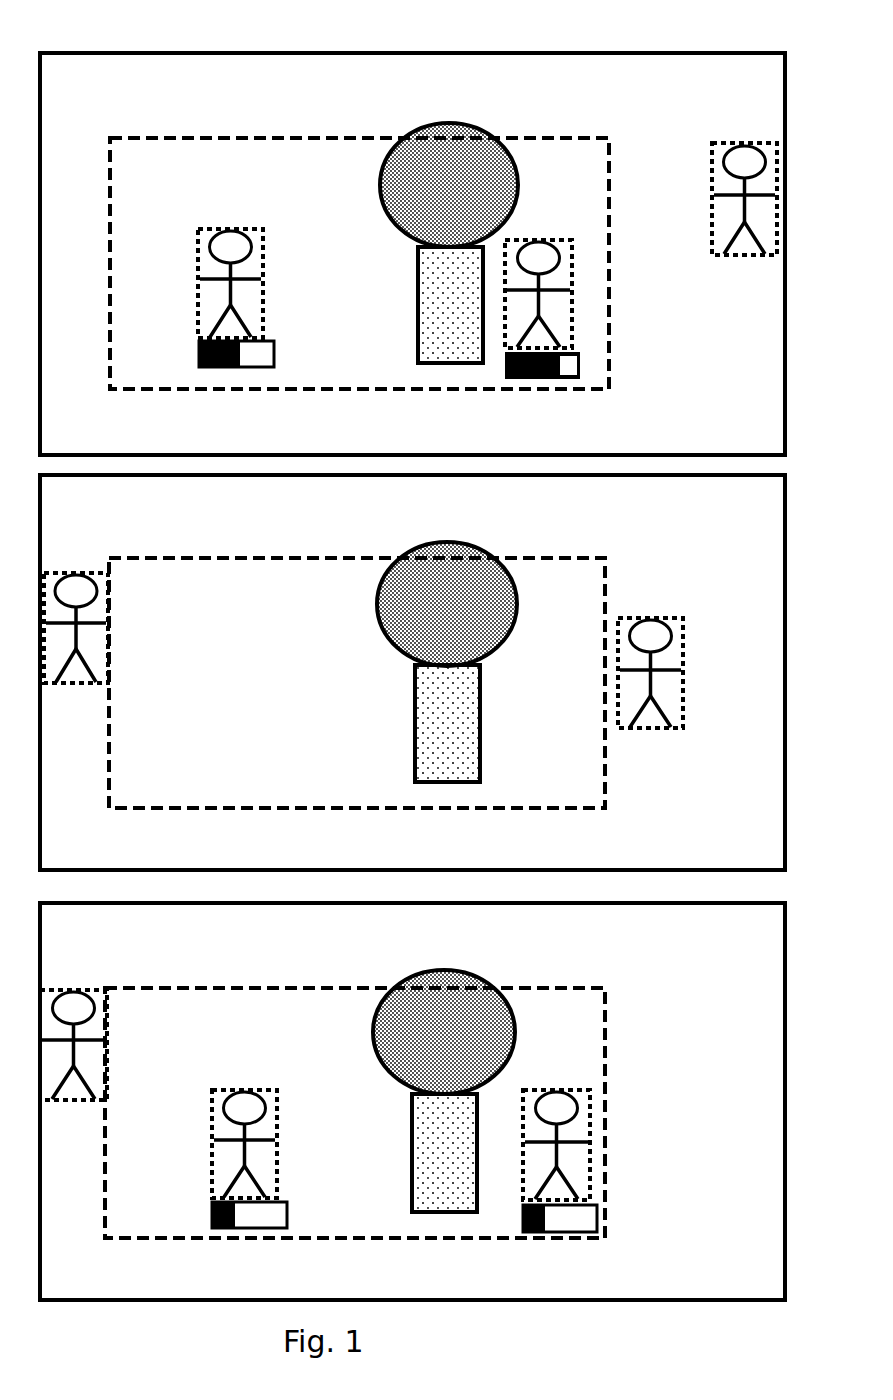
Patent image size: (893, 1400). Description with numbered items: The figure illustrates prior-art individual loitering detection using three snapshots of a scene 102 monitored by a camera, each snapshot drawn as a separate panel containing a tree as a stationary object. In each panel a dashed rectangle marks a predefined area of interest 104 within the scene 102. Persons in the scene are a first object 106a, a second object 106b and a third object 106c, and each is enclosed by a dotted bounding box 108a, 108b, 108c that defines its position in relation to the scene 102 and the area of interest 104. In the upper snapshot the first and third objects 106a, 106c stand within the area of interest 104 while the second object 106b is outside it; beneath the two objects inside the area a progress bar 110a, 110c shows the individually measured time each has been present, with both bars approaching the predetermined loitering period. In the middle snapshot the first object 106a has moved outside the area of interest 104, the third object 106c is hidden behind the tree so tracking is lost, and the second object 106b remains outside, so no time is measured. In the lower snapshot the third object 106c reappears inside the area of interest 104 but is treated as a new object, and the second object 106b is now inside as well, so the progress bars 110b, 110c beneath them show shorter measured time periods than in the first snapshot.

The scene 102 is at (668, 53).
The area of interest 104 is at (535, 138).
The first object 106a is at (240, 229).
The second object 106b is at (744, 143).
The third object 106c is at (545, 240).
The bounding box 108a is at (263, 268).
The bounding box 108b is at (722, 257).
The bounding box 108c is at (572, 280).
The progress bar 110a is at (276, 353).
The progress bar 110b is at (598, 1218).
The progress bar 110c is at (580, 365).